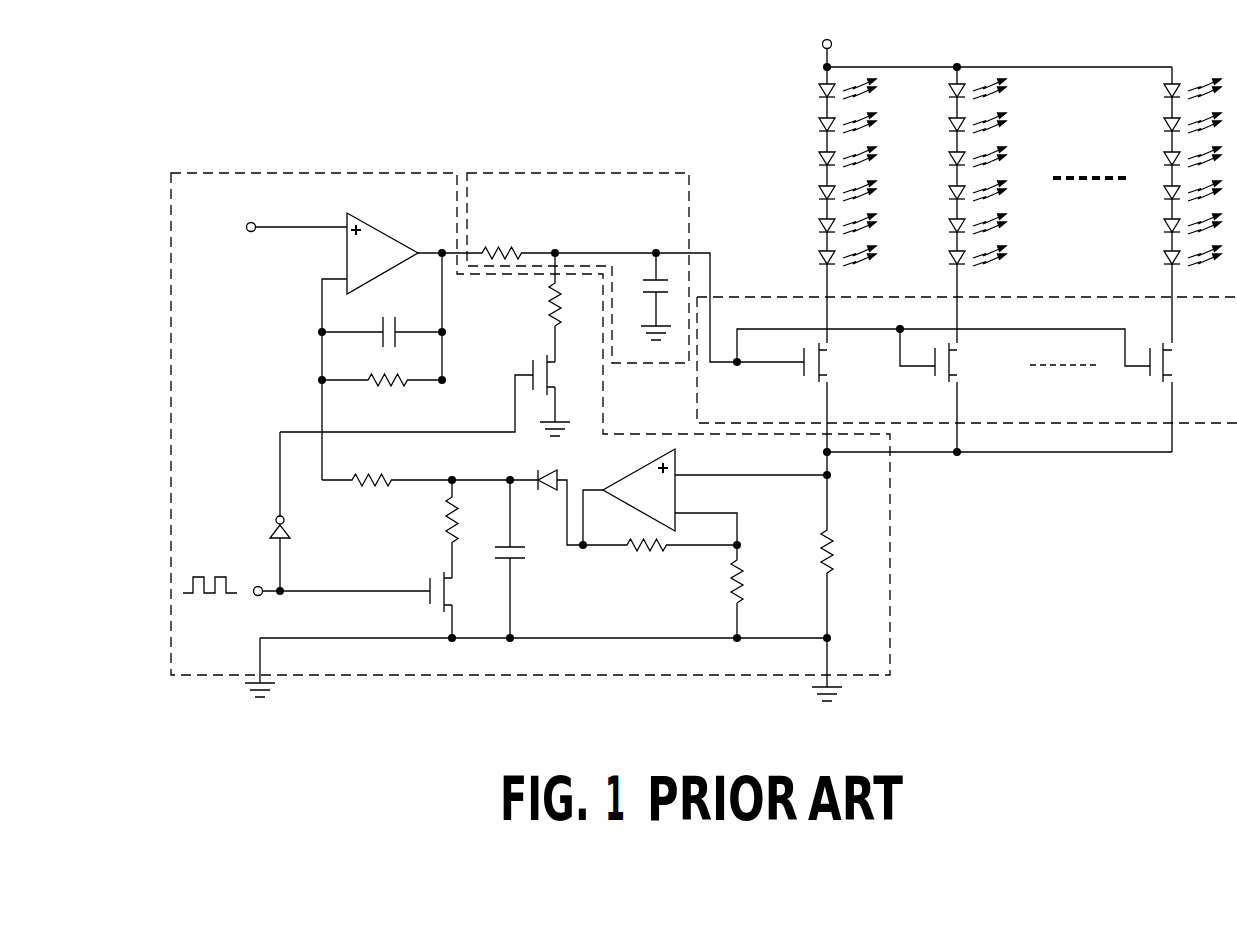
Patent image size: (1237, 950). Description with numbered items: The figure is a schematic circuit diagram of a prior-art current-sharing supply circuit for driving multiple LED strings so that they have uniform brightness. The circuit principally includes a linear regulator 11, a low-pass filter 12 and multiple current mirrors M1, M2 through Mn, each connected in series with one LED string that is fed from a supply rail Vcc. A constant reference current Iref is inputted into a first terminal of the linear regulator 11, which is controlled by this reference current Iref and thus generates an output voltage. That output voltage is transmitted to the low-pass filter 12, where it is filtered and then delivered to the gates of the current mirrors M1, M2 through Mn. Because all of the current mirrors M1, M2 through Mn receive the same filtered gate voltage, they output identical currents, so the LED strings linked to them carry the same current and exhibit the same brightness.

The linear regulator 11 is at (319, 172).
The low-pass filter 12 is at (585, 172).
The current mirror M1 is at (836, 397).
The current mirror M2 is at (970, 397).
The current mirror Mn is at (1187, 397).
The supply voltage terminal Vcc is at (992, 35).
The constant reference current Iref is at (269, 219).